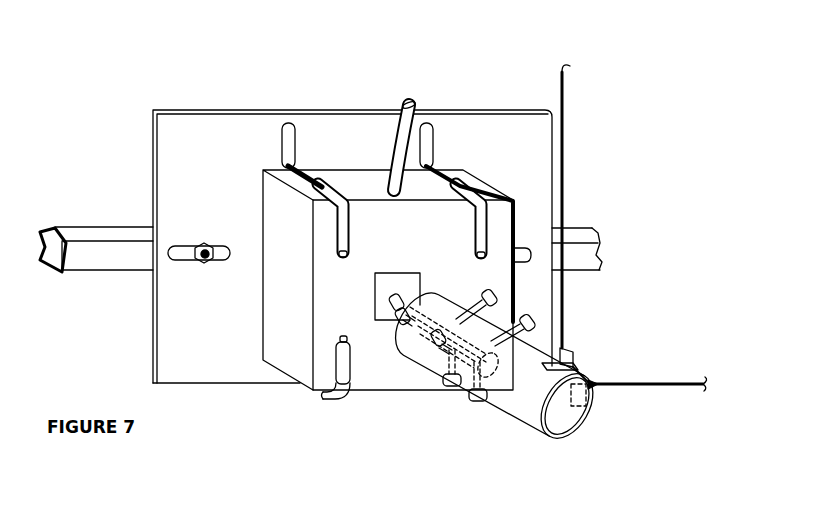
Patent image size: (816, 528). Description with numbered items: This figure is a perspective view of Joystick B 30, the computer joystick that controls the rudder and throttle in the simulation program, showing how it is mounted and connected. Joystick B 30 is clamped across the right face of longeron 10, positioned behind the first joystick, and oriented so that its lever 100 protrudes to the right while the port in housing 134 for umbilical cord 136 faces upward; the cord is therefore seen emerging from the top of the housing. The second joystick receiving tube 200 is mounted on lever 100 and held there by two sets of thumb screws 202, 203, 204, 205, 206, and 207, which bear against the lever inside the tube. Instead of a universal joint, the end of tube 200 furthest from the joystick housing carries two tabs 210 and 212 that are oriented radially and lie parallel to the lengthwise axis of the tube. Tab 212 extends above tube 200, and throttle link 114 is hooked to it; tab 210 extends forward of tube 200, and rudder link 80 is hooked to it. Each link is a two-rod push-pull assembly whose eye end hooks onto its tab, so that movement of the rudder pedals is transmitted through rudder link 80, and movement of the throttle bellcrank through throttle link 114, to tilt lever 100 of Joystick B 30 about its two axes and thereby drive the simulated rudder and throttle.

The longeron 10 is at (130, 226).
The Joystick B 30 is at (212, 148).
The rudder link 80 is at (672, 382).
The lever 100 is at (418, 296).
The throttle link 114 is at (566, 94).
The housing 134 is at (287, 339).
The umbilical cord 136 is at (390, 120).
The second joystick receiving tube 200 is at (540, 436).
The thumb screw 202 is at (395, 322).
The thumb screw 203 is at (495, 301).
The thumb screw 204 is at (440, 380).
The thumb screw 205 is at (440, 352).
The thumb screw 206 is at (538, 320).
The thumb screw 207 is at (480, 404).
The tab 210 is at (597, 388).
The tab 212 is at (576, 366).